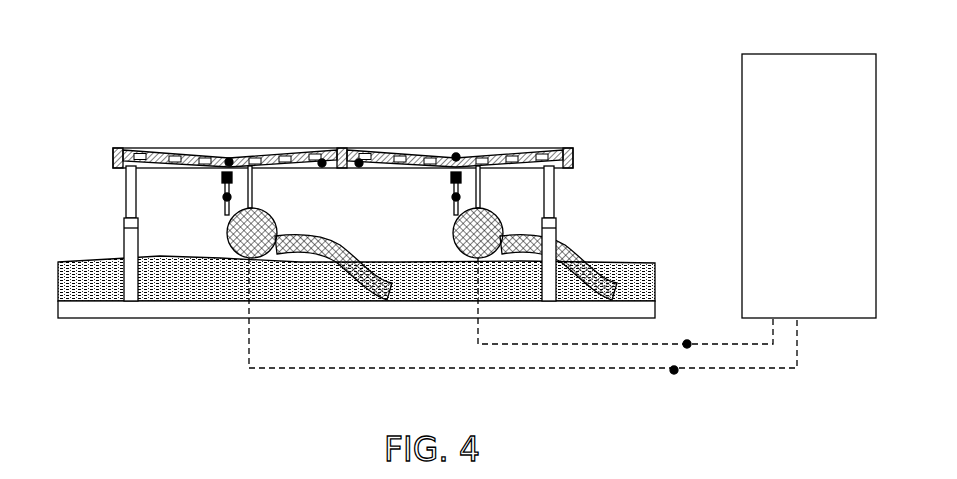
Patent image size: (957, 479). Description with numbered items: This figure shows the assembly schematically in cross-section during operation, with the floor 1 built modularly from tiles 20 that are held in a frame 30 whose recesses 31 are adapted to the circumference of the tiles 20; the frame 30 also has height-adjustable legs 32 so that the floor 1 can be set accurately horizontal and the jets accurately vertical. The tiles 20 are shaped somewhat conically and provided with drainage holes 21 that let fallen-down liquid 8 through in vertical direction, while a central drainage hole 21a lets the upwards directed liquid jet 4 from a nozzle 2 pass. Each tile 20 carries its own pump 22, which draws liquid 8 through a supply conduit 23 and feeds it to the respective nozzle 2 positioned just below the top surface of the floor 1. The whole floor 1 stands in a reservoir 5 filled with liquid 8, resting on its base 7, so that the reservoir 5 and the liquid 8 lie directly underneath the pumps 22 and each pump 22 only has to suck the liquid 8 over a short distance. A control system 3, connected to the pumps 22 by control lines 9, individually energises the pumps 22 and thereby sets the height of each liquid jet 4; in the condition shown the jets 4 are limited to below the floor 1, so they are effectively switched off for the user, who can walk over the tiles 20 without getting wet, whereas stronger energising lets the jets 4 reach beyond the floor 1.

The floor 1 is at (188, 135).
The nozzle 2 is at (224, 198).
The control system 3 is at (806, 147).
The liquid jet 4 is at (222, 177).
The reservoir 5 is at (158, 247).
The base plate 7 is at (73, 307).
The liquid 8 is at (107, 287).
The signal lines 9 is at (687, 347).
The floor module 20 is at (328, 152).
The drainage hole 21 is at (149, 156).
The drainage hole 21a is at (230, 159).
The pump 22 is at (268, 225).
The supply conduit 23 is at (355, 266).
The frame 30 is at (115, 155).
The recess 31 is at (358, 166).
The support leg 32 is at (130, 210).